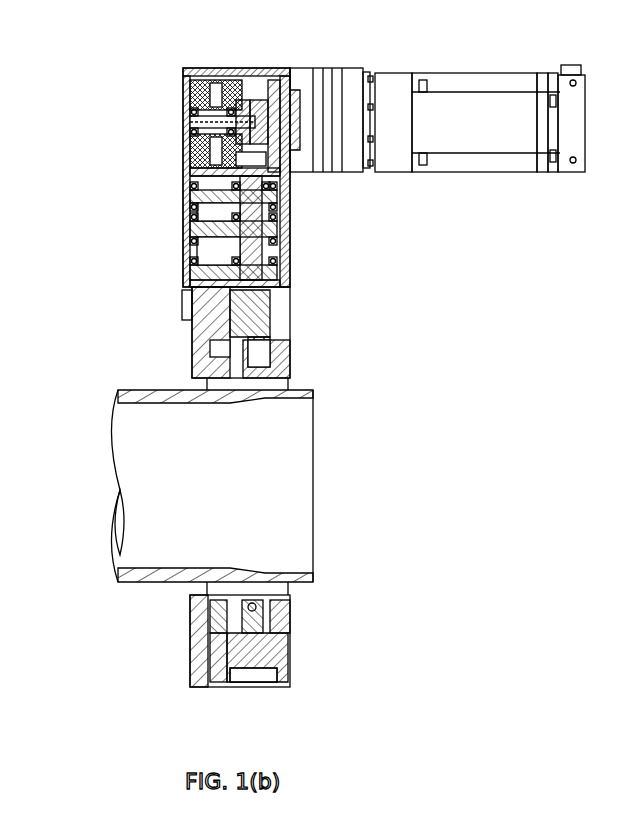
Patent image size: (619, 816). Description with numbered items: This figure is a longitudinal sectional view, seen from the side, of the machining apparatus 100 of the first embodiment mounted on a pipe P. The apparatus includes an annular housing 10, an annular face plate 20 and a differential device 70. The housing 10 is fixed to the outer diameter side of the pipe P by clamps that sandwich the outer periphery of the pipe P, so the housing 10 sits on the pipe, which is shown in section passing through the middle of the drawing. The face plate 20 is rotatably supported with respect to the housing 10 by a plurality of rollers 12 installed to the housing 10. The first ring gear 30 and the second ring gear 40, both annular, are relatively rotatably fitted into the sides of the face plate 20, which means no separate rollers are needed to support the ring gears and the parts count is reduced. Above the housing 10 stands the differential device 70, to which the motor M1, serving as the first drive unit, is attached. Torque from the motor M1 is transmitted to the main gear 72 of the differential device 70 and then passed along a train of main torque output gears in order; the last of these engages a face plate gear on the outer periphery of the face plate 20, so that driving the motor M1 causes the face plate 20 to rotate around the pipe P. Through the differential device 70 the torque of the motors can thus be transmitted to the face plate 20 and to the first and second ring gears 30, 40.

The differential device 70 is at (168, 114).
The main gear 72 is at (259, 98).
The motor M1 is at (492, 104).
The housing 10 is at (192, 328).
The roller 12 is at (272, 352).
The face plate 20 is at (288, 366).
The pipe P is at (298, 494).
The second ring gear 40 is at (284, 668).
The first ring gear 30 is at (240, 687).
The machining apparatus 100 is at (160, 720).